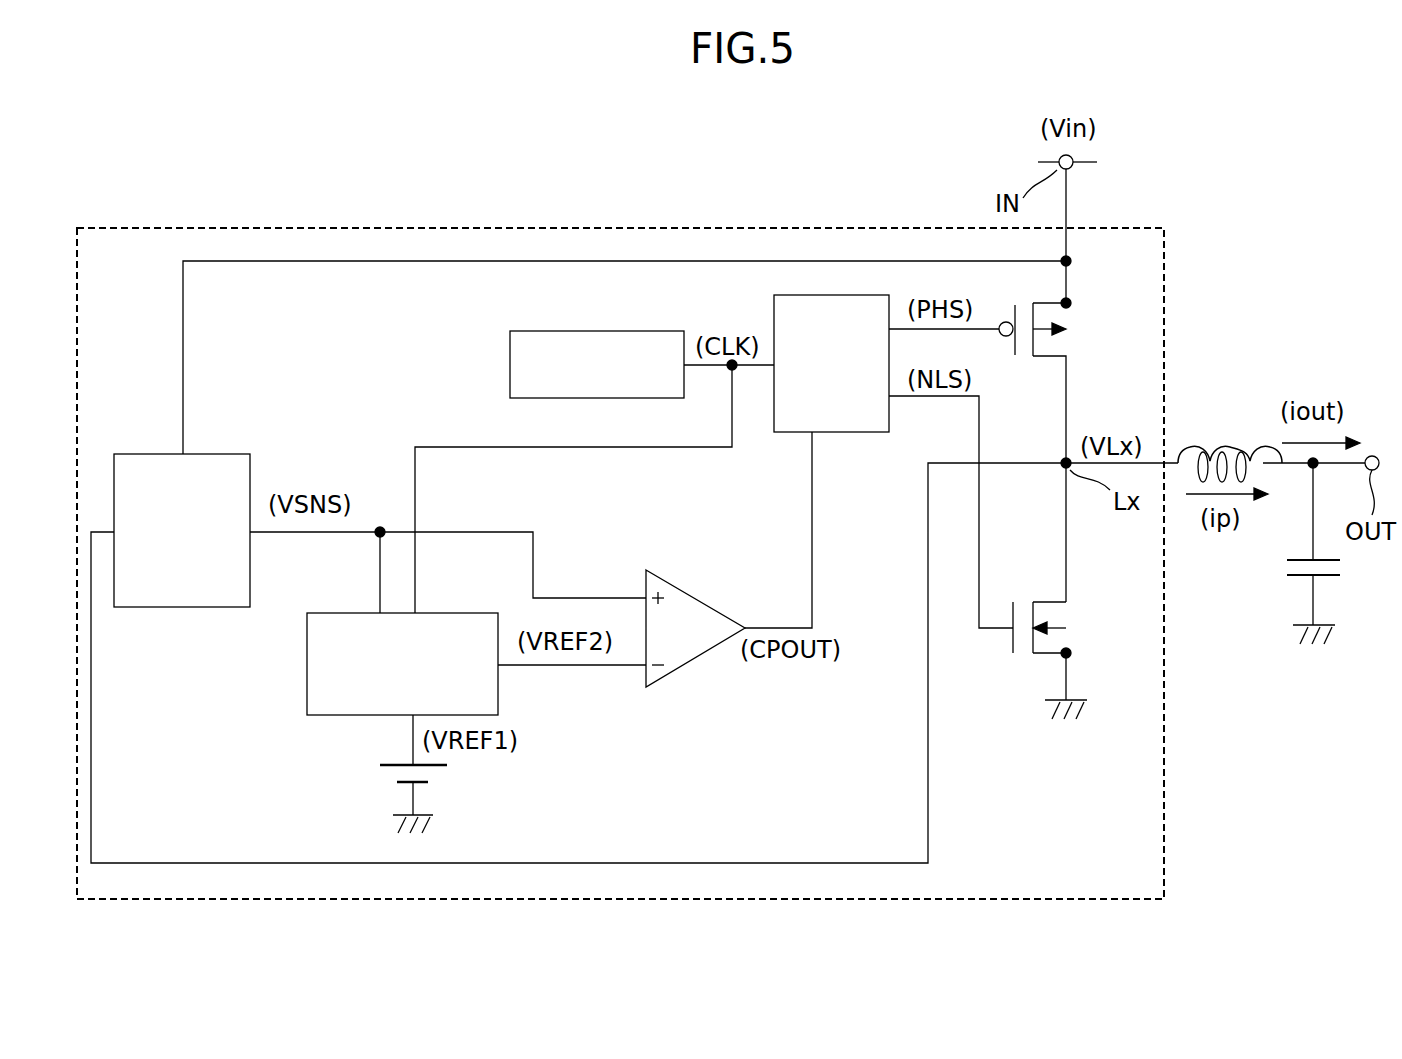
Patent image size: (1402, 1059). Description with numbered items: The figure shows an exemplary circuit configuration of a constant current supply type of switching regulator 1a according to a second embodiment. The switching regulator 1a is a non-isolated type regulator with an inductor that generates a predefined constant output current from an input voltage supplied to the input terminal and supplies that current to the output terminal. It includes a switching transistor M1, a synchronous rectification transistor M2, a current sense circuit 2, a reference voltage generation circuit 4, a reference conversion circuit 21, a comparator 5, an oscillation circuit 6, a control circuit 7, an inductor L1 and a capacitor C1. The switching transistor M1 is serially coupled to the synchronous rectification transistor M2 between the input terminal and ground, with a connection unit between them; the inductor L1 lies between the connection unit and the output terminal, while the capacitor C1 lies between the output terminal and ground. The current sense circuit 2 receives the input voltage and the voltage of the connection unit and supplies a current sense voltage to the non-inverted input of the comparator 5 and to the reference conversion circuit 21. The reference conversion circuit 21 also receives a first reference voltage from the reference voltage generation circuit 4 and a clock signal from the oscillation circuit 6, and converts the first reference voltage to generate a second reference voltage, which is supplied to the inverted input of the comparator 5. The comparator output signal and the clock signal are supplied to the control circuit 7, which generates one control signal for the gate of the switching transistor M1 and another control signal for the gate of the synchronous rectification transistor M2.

The switching regulator 1a is at (1190, 198).
The current sense circuit 2 is at (178, 607).
The reference conversion circuit 21 is at (307, 660).
The reference voltage generation circuit 4 is at (392, 772).
The comparator 5 is at (697, 665).
The oscillation circuit 6 is at (510, 362).
The control circuit 7 is at (848, 432).
The switching transistor M1 is at (1056, 380).
The synchronous rectification transistor M2 is at (1063, 591).
The inductor L1 is at (1271, 444).
The capacitor C1 is at (1295, 553).